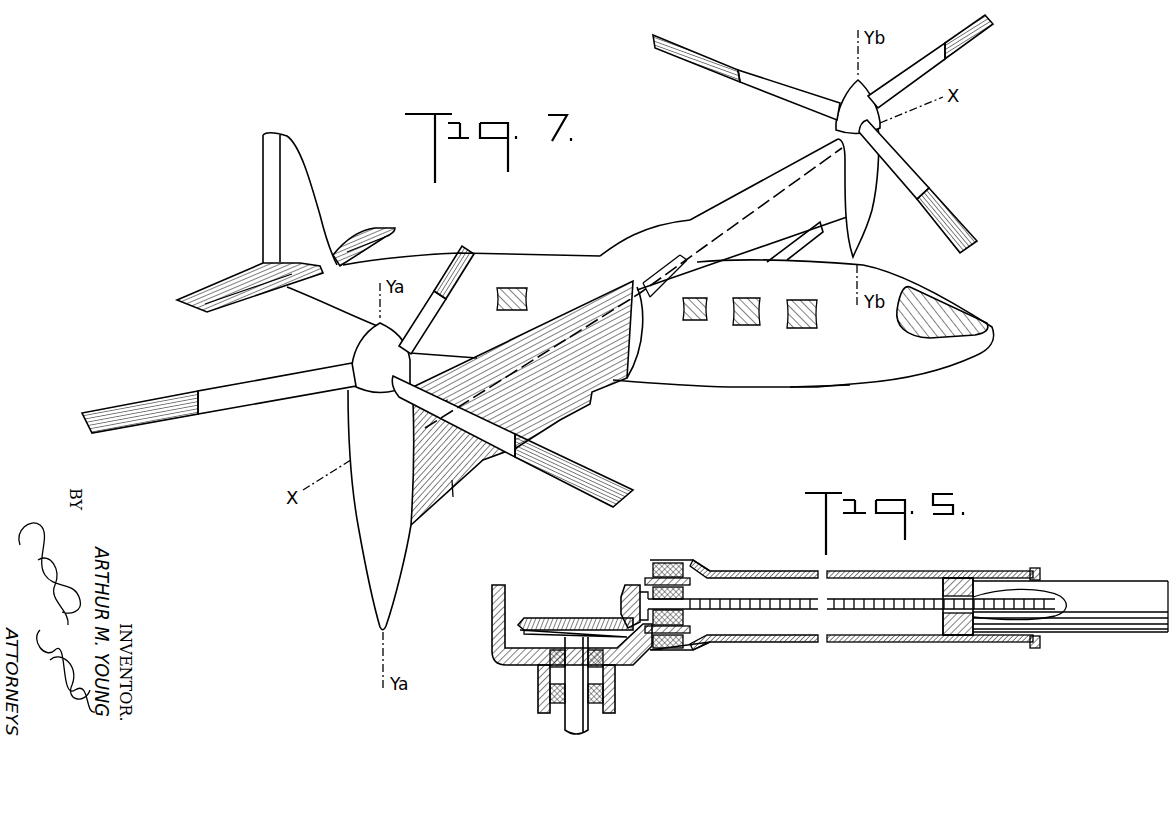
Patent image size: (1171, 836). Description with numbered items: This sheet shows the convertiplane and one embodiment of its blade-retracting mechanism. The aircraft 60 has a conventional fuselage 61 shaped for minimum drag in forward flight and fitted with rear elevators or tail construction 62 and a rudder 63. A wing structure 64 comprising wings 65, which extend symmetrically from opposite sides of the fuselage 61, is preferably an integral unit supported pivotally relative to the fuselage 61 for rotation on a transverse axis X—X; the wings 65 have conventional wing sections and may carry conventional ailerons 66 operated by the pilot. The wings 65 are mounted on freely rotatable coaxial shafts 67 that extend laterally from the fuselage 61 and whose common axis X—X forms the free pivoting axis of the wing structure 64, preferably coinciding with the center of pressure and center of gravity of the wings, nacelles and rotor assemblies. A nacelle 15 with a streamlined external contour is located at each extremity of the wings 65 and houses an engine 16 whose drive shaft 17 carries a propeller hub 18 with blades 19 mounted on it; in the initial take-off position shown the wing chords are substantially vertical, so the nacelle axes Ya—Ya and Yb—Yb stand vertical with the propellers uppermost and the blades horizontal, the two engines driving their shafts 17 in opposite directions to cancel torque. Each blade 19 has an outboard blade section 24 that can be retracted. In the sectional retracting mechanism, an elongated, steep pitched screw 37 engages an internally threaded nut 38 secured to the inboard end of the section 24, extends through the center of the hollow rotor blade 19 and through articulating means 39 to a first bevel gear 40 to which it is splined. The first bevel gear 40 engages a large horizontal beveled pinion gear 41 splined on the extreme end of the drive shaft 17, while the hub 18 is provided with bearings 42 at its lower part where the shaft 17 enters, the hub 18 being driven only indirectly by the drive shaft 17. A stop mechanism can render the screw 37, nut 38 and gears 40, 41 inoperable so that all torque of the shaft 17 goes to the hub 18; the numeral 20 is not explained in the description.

In FIG. 7, the nacelle 15 is at (366, 548).
In FIG. 7, the engine 16 is at (360, 434).
In FIG. 5, the drive shaft 17 is at (589, 731).
In FIG. 5, the propeller hub 18 is at (485, 653).
In FIG. 7, the rotor blade 19 is at (280, 357).
In FIG. 5, the rotor blade 19 is at (926, 563).
In FIG. 7, the blade shank tube 20 is at (212, 393).
In FIG. 5, the blade shank tube 20 is at (773, 571).
In FIG. 7, the outboard blade section 24 is at (163, 403).
In FIG. 5, the screw 37 is at (882, 612).
In FIG. 5, the nut 38 is at (958, 585).
In FIG. 5, the articulating means 39 is at (685, 559).
In FIG. 5, the first bevel gear 40 is at (626, 588).
In FIG. 5, the beveled pinion gear 41 is at (593, 617).
In FIG. 5, the bearings 42 is at (540, 705).
In FIG. 7, the aircraft 60 is at (884, 388).
In FIG. 7, the fuselage 61 is at (818, 374).
In FIG. 7, the rear elevators or tail construction 62 is at (386, 239).
In FIG. 7, the rudder 63 is at (322, 186).
In FIG. 7, the wing structure 64 is at (653, 240).
In FIG. 7, the wings 65 is at (806, 164).
In FIG. 7, the ailerons 66 is at (548, 422).
In FIG. 7, the coaxial shafts 67 is at (594, 306).